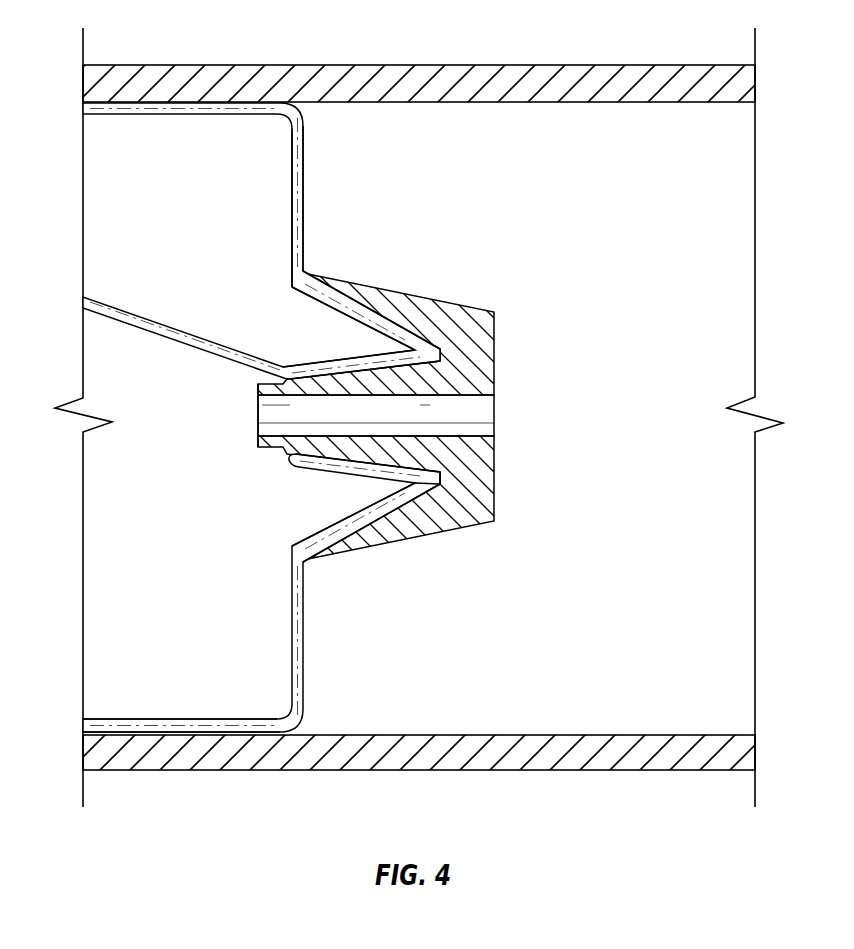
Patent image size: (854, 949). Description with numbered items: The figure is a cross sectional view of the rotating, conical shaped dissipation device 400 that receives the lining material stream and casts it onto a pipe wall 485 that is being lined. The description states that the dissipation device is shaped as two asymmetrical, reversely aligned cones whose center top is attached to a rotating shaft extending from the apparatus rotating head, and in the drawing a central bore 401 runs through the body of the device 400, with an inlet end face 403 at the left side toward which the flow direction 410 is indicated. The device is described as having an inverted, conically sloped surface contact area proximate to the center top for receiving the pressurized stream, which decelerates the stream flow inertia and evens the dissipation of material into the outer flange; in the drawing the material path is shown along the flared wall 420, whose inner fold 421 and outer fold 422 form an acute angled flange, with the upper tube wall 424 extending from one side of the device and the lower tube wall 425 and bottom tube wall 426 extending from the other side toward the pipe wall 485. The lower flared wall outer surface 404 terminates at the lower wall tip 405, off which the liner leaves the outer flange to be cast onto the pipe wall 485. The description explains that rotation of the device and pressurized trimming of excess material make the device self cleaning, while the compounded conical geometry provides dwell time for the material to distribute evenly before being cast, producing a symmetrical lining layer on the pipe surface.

The nozzle body 400 is at (512, 356).
The central bore 401 is at (309, 388).
The inlet end face of nozzle body 403 is at (257, 392).
The lower flared wall outer surface 404 is at (325, 548).
The lower wall tip 405 is at (445, 478).
The flow inlet direction 410 is at (246, 430).
The flared tube wall 420 is at (104, 296).
The inner fold of flared wall 421 is at (322, 363).
The outer fold of flared wall 422 is at (402, 342).
The upper tube wall 424 is at (302, 293).
The lower tube wall 425 is at (292, 612).
The bottom tube wall 426 is at (160, 717).
The outer pipe wall 485 is at (607, 747).